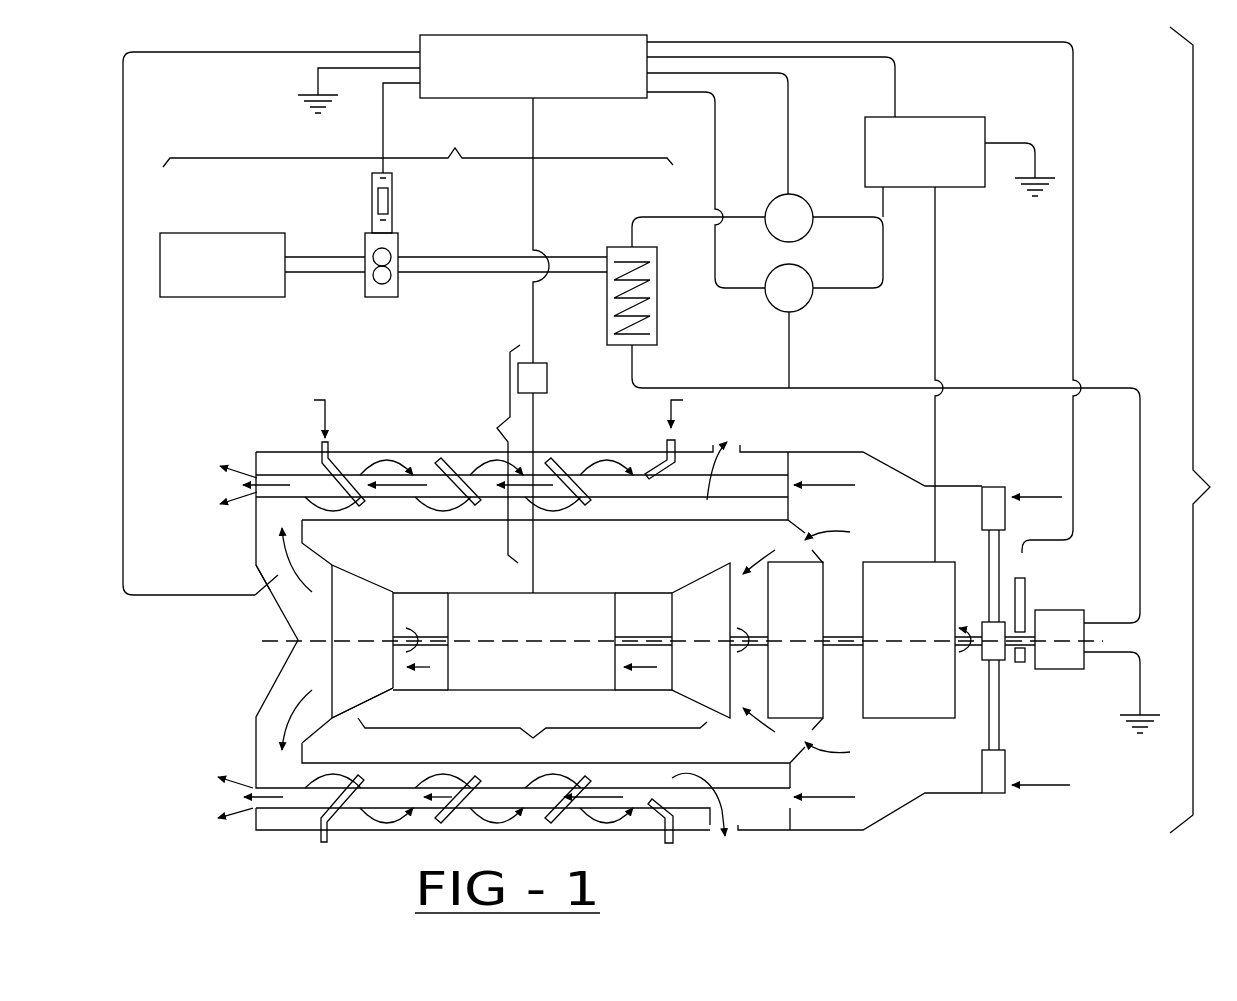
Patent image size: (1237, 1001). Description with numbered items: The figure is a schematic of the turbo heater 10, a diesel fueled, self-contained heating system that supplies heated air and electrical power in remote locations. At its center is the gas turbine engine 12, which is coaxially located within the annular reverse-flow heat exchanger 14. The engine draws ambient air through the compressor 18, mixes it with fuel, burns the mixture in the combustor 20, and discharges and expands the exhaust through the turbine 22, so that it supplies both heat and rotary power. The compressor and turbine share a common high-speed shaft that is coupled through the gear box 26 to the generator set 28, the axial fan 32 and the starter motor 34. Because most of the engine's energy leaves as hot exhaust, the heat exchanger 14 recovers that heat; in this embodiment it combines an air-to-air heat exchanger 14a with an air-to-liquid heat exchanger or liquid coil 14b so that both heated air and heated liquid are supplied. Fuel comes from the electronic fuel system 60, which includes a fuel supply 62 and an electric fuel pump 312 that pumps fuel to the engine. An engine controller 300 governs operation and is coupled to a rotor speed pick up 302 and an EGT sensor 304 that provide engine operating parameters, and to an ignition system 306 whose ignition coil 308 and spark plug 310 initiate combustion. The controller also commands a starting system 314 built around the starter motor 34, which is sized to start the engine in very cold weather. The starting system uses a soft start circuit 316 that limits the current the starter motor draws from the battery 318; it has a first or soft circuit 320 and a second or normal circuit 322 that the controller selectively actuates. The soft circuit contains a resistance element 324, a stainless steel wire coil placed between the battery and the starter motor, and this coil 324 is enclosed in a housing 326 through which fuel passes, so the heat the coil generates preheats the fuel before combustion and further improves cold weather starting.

The turbo heater 10 is at (1203, 430).
The gas turbine engine 12 is at (682, 695).
The reverse-flow heat exchanger 14 is at (816, 843).
The air-to-air heat exchanger 14a is at (318, 802).
The air-to-liquid heat exchanger or liquid coil 14b is at (330, 462).
The compressor 18 is at (719, 685).
The combustor 20 is at (545, 630).
The turbine 22 is at (379, 680).
The gear box 26 is at (810, 607).
The generator set 28 is at (922, 683).
The axial fan 32 is at (992, 768).
The starter motor 34 is at (1075, 663).
The fuel system 60 is at (418, 146).
The fuel supply 62 is at (276, 265).
The engine controller 300 is at (632, 83).
The rotor speed pick up 302 is at (1022, 605).
The EGT sensor 304 is at (278, 577).
The ignition system 306 is at (494, 454).
The ignition coil 308 is at (541, 363).
The spark plug 310 is at (532, 589).
The electric fuel pump 312 is at (398, 243).
The starting system 314 is at (898, 277).
The soft start circuit 316 is at (740, 310).
The battery 318 is at (937, 182).
The soft circuit 320 is at (833, 220).
The normal circuit 322 is at (790, 362).
The resistance element 324 is at (657, 312).
The housing 326 is at (647, 250).